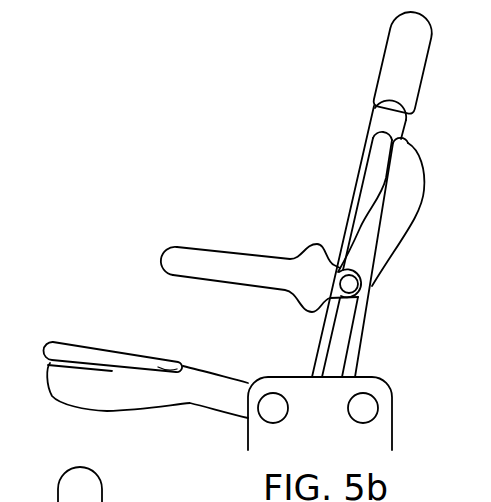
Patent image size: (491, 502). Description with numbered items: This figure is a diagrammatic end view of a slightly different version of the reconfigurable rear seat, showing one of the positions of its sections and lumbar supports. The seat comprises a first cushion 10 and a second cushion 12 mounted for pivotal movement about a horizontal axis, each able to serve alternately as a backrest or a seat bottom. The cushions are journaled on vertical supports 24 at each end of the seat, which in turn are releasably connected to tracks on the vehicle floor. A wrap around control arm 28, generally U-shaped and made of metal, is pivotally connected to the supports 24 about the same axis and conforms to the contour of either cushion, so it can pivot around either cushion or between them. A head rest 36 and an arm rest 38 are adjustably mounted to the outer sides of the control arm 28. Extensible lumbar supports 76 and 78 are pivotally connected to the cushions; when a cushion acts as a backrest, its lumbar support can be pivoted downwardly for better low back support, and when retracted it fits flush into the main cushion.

The first cushion 10 is at (118, 408).
The second cushion 12 is at (412, 188).
The vertical supports 24 is at (367, 388).
The wrap around control arm 28 is at (400, 133).
The head rests 36 is at (417, 72).
The arm rests 38 is at (227, 260).
The extensible lumbar support 76 is at (90, 348).
The extensible lumbar support 78 is at (370, 180).